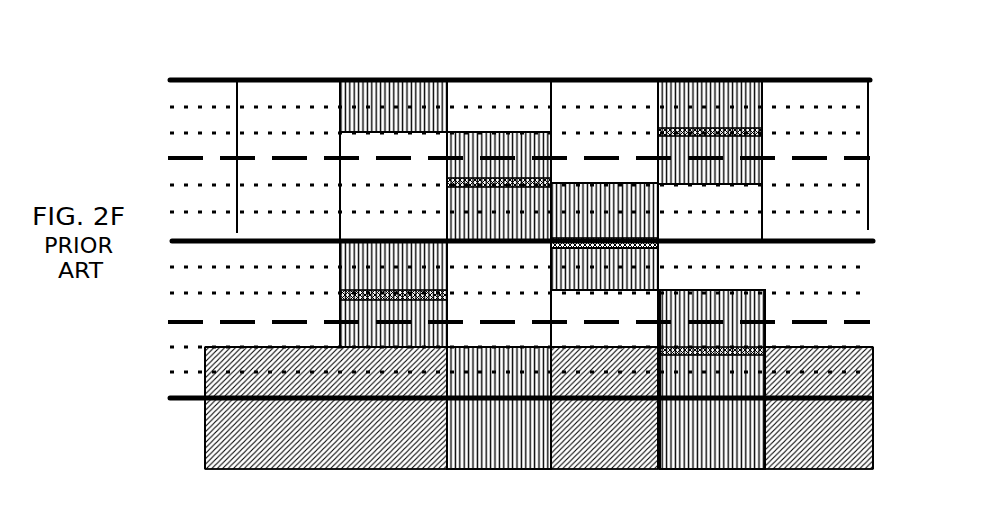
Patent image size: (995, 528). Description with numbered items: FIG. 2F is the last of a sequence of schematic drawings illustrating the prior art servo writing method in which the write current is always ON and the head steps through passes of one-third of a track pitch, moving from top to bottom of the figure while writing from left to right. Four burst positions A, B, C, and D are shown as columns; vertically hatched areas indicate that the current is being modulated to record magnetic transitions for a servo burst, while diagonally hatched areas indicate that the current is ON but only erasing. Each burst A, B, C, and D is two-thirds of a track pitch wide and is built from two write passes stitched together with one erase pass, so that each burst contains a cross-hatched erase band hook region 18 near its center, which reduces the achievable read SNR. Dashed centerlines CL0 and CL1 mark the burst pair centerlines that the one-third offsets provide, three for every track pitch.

The erase band hook region 18 is at (373, 288).
The burst position A is at (393, 200).
The burst position B is at (499, 261).
The burst position C is at (604, 171).
The burst position D is at (711, 261).
The center line 0 CL0 is at (541, 156).
The center line 1 CL1 is at (545, 324).